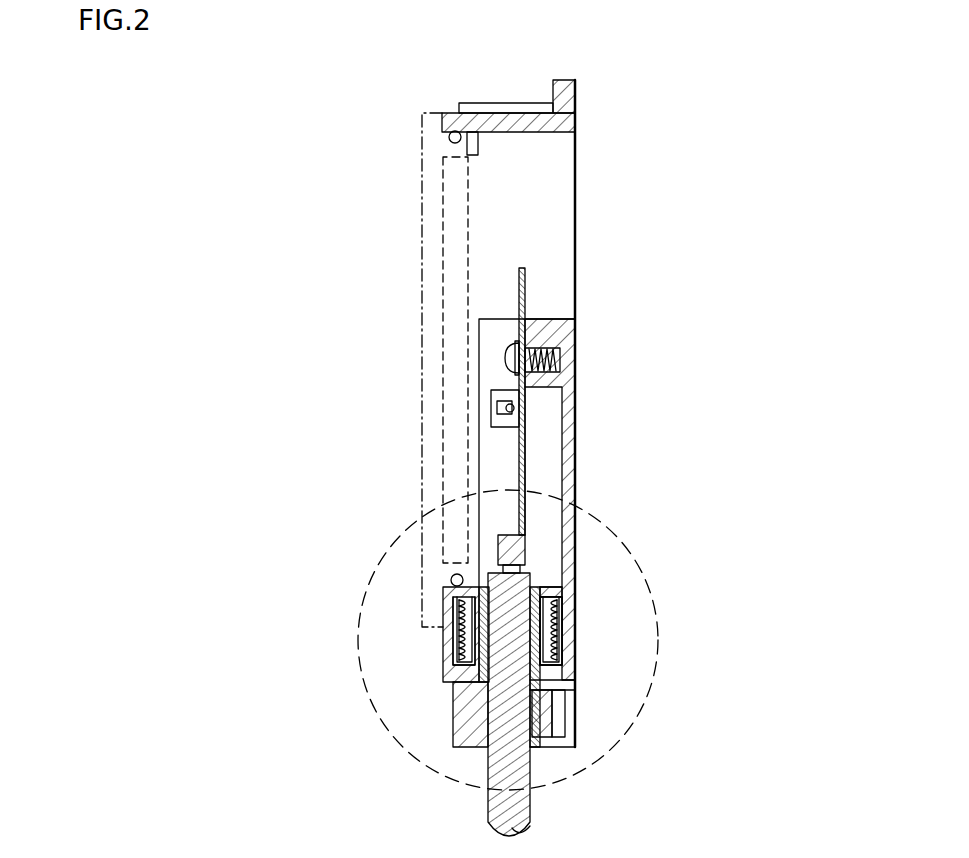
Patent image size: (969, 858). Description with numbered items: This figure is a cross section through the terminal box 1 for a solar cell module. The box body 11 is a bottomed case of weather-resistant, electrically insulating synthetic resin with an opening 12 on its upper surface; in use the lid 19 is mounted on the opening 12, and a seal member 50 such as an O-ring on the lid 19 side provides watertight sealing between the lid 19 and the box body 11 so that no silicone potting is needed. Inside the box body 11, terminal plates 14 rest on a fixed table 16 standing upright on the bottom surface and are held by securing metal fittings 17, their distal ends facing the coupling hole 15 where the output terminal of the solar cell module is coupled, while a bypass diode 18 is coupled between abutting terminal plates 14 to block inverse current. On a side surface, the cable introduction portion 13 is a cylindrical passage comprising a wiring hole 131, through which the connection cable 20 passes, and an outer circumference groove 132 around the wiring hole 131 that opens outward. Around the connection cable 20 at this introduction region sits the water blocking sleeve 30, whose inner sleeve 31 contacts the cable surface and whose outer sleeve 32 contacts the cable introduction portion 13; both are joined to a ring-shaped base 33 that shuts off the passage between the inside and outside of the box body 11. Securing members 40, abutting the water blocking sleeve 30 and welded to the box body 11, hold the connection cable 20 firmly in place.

The terminal box 1 is at (357, 155).
The box body 11 is at (453, 117).
The opening 12 is at (442, 135).
The cable introduction portion 13 is at (430, 653).
The wiring hole 131 is at (541, 585).
The outer circumference groove 132 is at (566, 597).
The terminal plate 14 is at (527, 270).
The coupling hole 15 is at (562, 155).
The fixed table 16 is at (547, 320).
The securing metal fitting 17 is at (507, 362).
The bypass diode 18 is at (491, 407).
The lid 19 is at (425, 263).
The connection cable 20 is at (497, 807).
The water blocking sleeve 30 is at (757, 613).
The inner sleeve 31 is at (560, 625).
The outer sleeve 32 is at (557, 647).
The base 33 is at (563, 678).
The securing member 40 is at (458, 716).
The seal member 50 is at (451, 138).